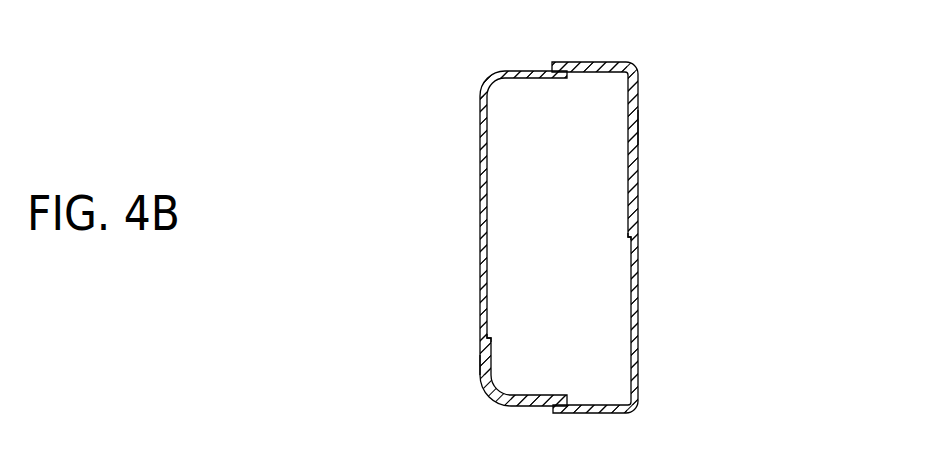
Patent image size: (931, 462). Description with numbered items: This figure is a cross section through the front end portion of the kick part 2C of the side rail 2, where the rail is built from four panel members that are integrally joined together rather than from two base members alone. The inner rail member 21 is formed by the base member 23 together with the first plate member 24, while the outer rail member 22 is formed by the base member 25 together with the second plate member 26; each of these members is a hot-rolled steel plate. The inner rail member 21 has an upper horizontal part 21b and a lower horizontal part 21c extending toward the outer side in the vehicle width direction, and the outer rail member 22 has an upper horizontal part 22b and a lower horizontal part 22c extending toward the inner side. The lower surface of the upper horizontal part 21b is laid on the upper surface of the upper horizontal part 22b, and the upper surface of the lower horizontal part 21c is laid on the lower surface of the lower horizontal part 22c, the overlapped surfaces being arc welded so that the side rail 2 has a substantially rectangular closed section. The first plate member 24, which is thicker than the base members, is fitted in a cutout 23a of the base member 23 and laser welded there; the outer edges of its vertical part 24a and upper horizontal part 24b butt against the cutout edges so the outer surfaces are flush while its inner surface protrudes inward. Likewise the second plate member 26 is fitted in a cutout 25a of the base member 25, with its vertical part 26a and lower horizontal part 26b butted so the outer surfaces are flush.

The side rail 2 is at (349, 31).
The kick part 2C is at (505, 52).
The inner rail member 21 is at (748, 208).
The upper horizontal part 21b is at (636, 37).
The upper horizontal part 24b is at (605, 62).
The lower horizontal part 21c is at (585, 405).
The first plate member 24 is at (645, 209).
The vertical part 24a is at (638, 127).
The base member 23 is at (645, 275).
The cutout 23a is at (628, 235).
The outer rail member 22 is at (378, 233).
The upper horizontal part 22b is at (530, 71).
The lower horizontal part 22c is at (569, 355).
The lower horizontal part 26b is at (537, 395).
The base member 25 is at (474, 233).
The cutout 25a is at (492, 340).
The second plate member 26 is at (474, 349).
The vertical part 26a is at (480, 366).